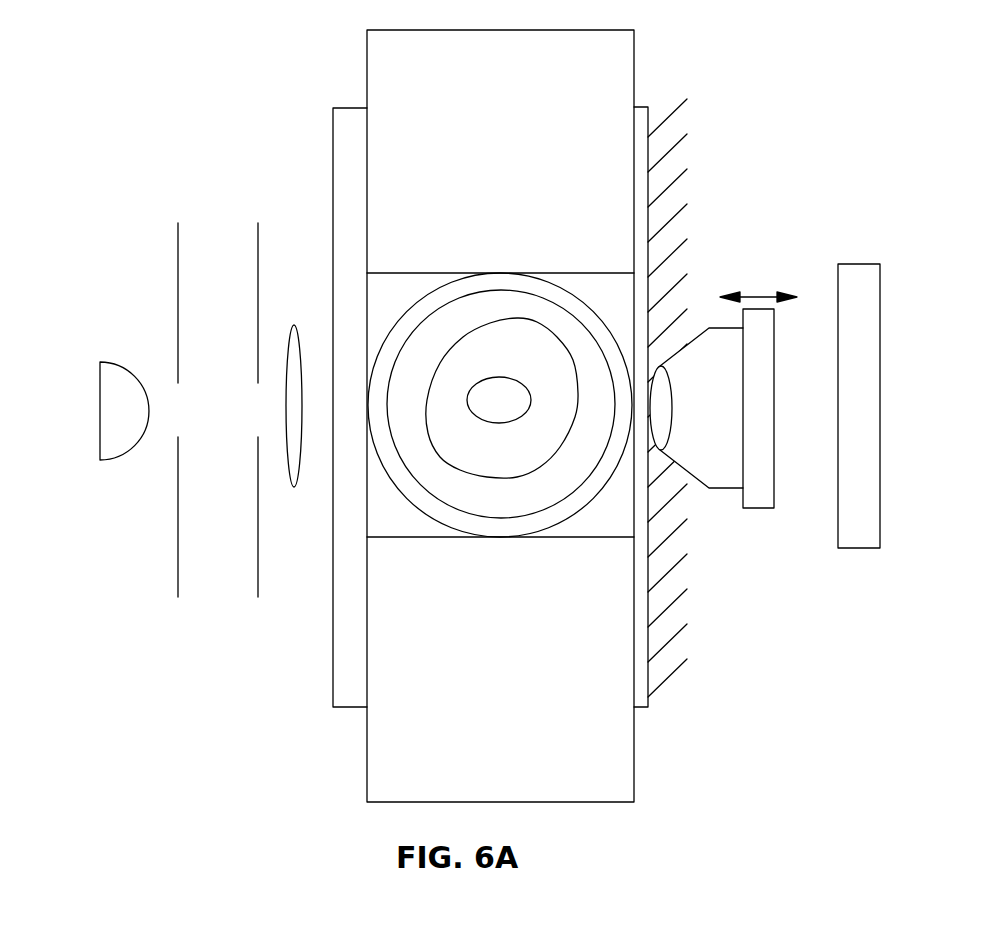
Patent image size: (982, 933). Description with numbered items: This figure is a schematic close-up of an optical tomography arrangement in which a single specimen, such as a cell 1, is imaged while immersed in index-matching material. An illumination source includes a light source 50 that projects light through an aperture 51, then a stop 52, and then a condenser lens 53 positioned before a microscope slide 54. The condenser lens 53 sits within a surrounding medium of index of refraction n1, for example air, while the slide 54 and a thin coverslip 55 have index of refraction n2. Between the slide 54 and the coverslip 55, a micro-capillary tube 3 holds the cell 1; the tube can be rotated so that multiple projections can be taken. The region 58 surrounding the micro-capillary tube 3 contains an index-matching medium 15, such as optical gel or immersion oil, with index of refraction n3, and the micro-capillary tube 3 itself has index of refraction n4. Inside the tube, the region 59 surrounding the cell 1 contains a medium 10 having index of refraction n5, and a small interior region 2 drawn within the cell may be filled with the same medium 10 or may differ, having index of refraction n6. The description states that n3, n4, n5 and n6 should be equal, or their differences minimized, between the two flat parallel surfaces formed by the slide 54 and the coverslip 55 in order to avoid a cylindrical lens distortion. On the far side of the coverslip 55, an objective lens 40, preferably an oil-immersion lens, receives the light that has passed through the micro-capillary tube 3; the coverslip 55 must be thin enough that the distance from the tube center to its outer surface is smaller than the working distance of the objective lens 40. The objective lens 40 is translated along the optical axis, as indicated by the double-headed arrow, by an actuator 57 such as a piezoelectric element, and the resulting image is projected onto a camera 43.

The cell 1 is at (470, 363).
The sample core 2 is at (505, 395).
The micro-capillary tube 3 is at (465, 290).
The medium 10 is at (542, 493).
The index-matching medium 15 is at (422, 527).
The objective lens 40 is at (662, 407).
The camera 43 is at (838, 275).
The light source 50 is at (100, 410).
The aperture 51 is at (178, 250).
The stop 52 is at (258, 243).
The condenser lens 53 is at (294, 325).
The microscope slide 54 is at (333, 672).
The coverslip 55 is at (645, 107).
The actuator 57 is at (760, 510).
The region surrounding the micro-capillary tube 58 is at (500, 405).
The region surrounding the cell 59 is at (501, 404).
The index of refraction n1 is at (295, 505).
The index of refraction n2 is at (350, 510).
The index of refraction n3 is at (387, 525).
The index of refraction n4 is at (502, 528).
The index of refraction n5 is at (495, 497).
The index of refraction n6 is at (508, 452).